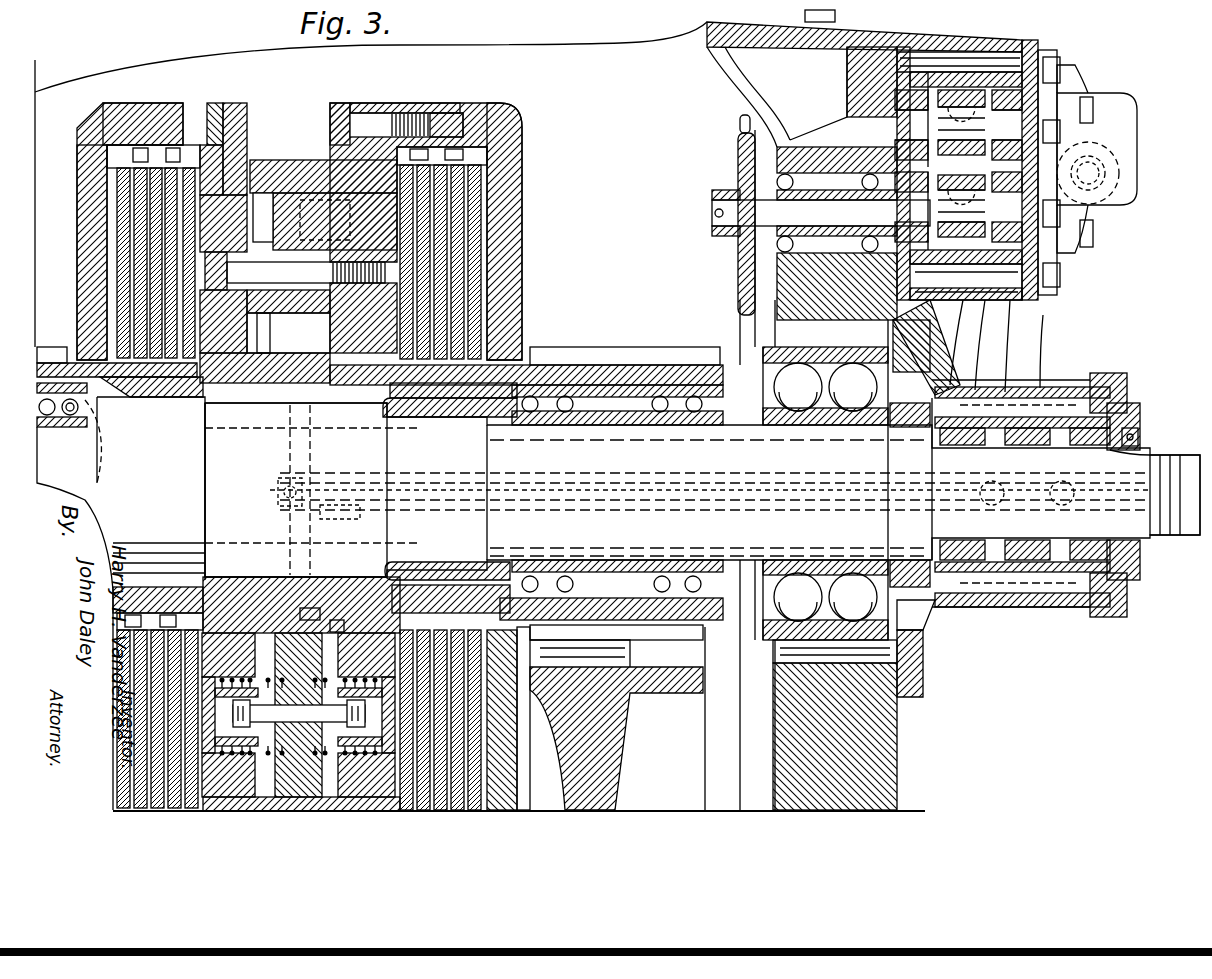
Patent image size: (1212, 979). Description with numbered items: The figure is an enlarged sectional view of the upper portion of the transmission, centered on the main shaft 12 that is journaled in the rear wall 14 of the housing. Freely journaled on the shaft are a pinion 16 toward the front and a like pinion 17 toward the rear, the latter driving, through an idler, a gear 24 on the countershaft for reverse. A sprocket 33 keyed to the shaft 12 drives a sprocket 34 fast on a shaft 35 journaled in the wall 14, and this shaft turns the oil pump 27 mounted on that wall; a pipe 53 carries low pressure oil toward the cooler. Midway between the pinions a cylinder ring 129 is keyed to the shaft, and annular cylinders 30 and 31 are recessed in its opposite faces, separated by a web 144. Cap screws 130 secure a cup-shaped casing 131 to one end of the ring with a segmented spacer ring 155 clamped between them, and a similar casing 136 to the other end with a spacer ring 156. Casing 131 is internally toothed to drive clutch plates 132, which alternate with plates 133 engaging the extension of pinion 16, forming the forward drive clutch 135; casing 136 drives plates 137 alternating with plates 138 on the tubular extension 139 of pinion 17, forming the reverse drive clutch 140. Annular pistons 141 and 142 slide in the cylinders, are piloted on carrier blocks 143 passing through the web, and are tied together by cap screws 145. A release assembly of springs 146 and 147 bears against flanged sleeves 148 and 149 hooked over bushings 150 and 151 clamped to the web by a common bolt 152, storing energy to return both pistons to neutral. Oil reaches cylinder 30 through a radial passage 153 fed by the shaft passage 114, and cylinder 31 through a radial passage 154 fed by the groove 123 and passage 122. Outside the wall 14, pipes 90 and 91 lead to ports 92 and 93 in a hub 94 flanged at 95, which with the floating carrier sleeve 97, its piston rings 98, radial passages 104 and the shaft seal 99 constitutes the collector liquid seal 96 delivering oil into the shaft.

The main shaft 12 is at (702, 490).
The rear wall 14 is at (897, 727).
The pinion 16 is at (50, 347).
The pinion 17 is at (586, 347).
The gear 24 is at (705, 680).
The oil pump 27 is at (1010, 41).
The annular cylinder 30 is at (263, 193).
The annular cylinder 31 is at (318, 193).
The sprocket 33 is at (742, 585).
The sprocket 34 is at (150, 400).
The shaft 35 is at (728, 232).
The pipe 53 is at (1100, 150).
The pipe 90 is at (1000, 338).
The pipe 91 is at (985, 372).
The port 92 is at (1055, 482).
The port 93 is at (985, 482).
The hub 94 is at (1022, 607).
The flange 95 is at (923, 660).
The collector liquid seal 96 is at (1138, 369).
The carrier sleeve 97 is at (1140, 447).
The piston rings 98 is at (1148, 462).
The shaft seal 99 is at (1138, 433).
The radial passages 104 is at (315, 612).
The passage 114 is at (330, 440).
The passage 122 is at (365, 525).
The longitudinal groove 123 is at (318, 577).
The cylinder ring 129 is at (285, 160).
The cap screws 130 is at (340, 103).
The cup-shaped casing 131 is at (160, 103).
The clutch plates 132 is at (106, 130).
The clutch plates 133 is at (95, 183).
The forward drive clutch 135 is at (158, 72).
The cup-shaped casing 136 is at (495, 104).
The clutch plates 137 is at (470, 162).
The clutch plates 138 is at (478, 192).
The tubular extension 139 is at (480, 330).
The reverse drive clutch 140 is at (470, 96).
The annular piston 141 is at (215, 190).
The annular piston 142 is at (405, 125).
The carrier blocks 143 is at (263, 385).
The web 144 is at (385, 405).
The cap screws 145 is at (295, 271).
The spring 146 is at (302, 750).
The spring 147 is at (310, 765).
The sleeve 148 is at (228, 775).
The sleeve 149 is at (366, 775).
The bushing 150 is at (228, 693).
The bushing 151 is at (366, 693).
The bolt 152 is at (299, 712).
The radial passage 153 is at (292, 400).
The radial passage 154 is at (265, 577).
The spacer ring 155 is at (215, 118).
The spacer ring 156 is at (378, 94).